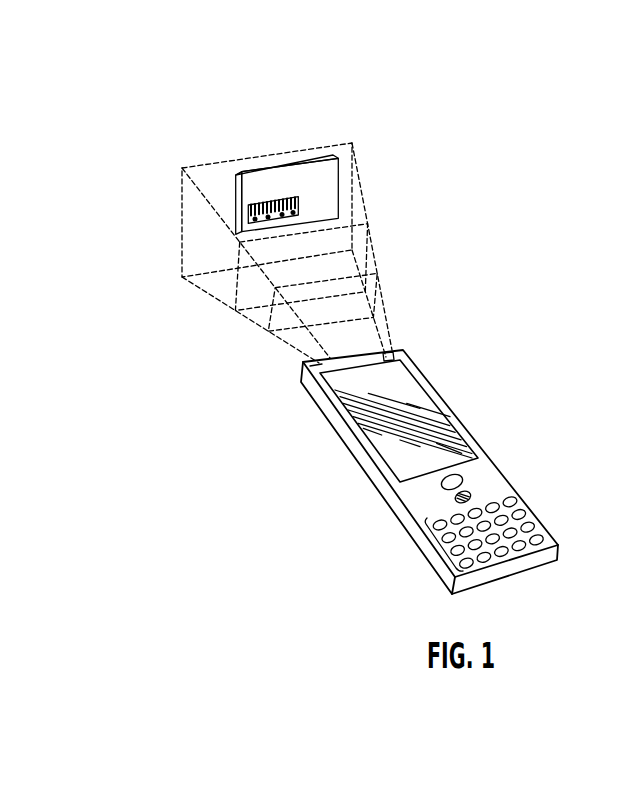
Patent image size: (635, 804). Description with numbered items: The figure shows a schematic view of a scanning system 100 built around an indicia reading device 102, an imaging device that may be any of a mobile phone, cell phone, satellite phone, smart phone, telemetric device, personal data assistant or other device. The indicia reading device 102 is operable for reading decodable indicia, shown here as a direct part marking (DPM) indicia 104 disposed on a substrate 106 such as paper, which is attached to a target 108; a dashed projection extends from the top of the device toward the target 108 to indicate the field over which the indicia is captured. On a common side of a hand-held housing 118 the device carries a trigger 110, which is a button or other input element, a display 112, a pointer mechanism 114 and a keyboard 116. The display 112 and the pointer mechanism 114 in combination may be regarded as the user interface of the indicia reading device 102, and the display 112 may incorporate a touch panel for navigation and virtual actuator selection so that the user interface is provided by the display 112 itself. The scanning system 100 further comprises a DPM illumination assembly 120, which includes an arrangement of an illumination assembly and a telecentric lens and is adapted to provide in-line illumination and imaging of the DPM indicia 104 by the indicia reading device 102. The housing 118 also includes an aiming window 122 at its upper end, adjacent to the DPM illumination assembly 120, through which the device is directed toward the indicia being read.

The scanning system 100 is at (165, 138).
The indicia reading device 102 is at (475, 336).
The direct part marking (DPM) indicia 104 is at (287, 202).
The substrate 106 is at (258, 202).
The target 108 is at (332, 183).
The trigger 110 is at (463, 480).
The display 112 is at (446, 426).
The pointer mechanism 114 is at (472, 496).
The keyboard 116 is at (440, 552).
The hand-held housing 118 is at (538, 522).
The DPM illumination assembly 120 is at (400, 350).
The aiming window 122 is at (312, 361).